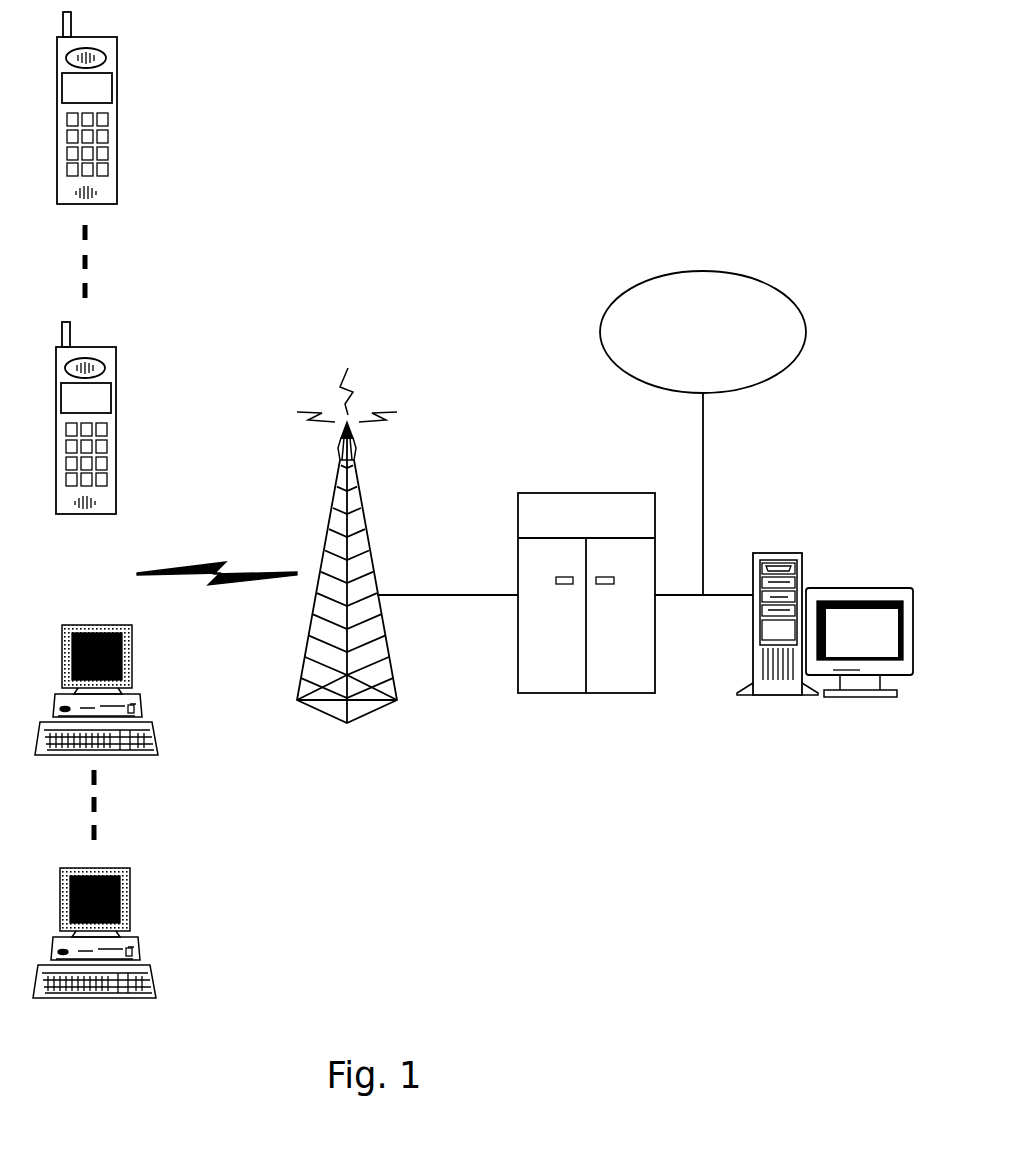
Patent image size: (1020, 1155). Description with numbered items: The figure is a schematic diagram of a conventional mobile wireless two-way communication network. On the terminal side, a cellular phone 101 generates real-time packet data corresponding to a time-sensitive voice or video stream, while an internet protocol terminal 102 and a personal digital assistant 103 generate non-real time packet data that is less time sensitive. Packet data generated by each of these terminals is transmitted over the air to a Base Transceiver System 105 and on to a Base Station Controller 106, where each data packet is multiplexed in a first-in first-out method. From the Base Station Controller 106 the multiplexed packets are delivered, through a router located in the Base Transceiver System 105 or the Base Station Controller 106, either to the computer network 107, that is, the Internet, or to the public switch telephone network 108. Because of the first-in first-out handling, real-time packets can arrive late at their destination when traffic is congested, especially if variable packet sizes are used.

The cellular phone 101 is at (118, 134).
The internet protocol (IP) terminal 102 is at (135, 687).
The personal digital assistant (PDA) 103 is at (135, 920).
The Base Transceiver System (BTS) 105 is at (347, 568).
The Base Station Controller (BSC) 106 is at (586, 621).
The computer network 107 is at (825, 652).
The public switch telephone network (PSTN) 108 is at (807, 338).